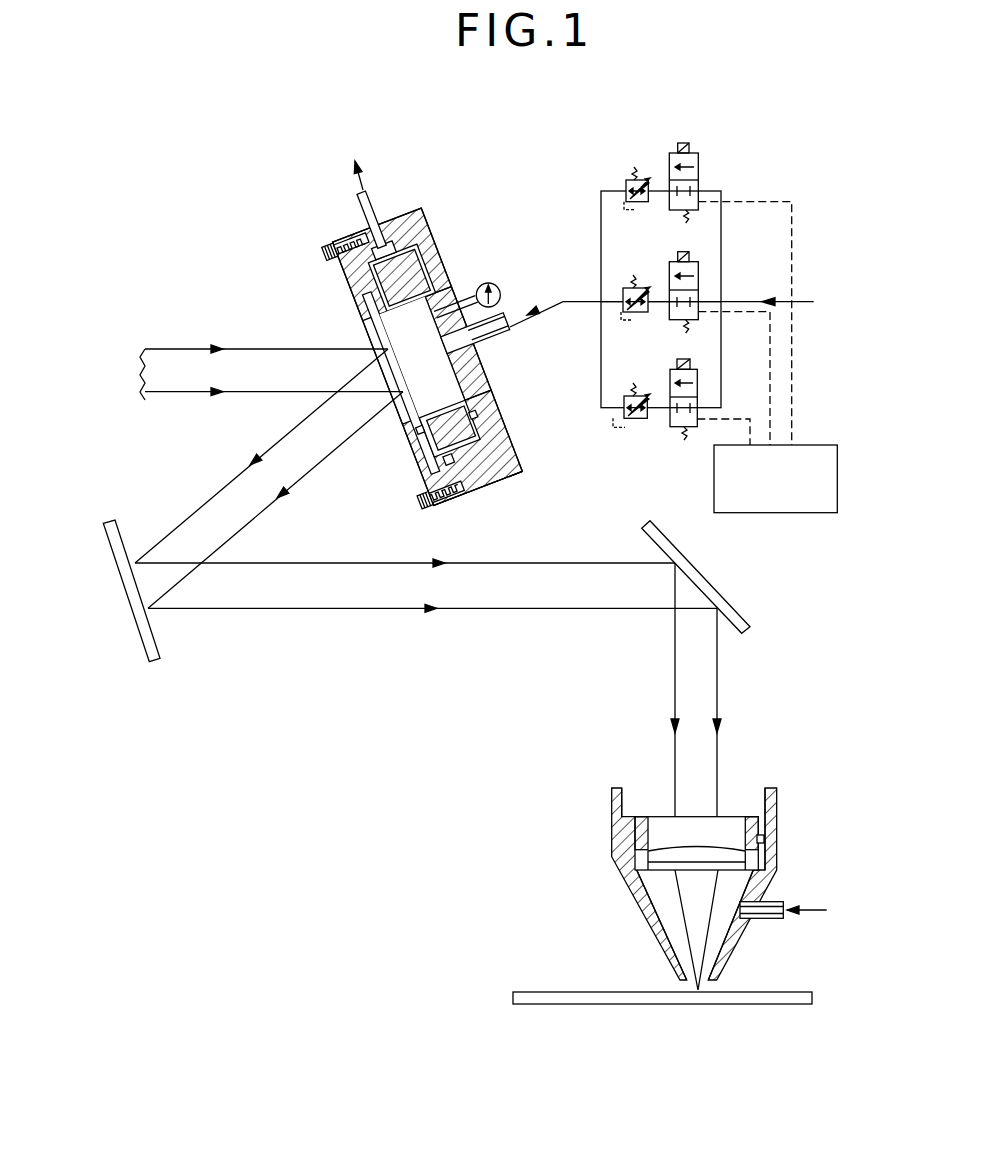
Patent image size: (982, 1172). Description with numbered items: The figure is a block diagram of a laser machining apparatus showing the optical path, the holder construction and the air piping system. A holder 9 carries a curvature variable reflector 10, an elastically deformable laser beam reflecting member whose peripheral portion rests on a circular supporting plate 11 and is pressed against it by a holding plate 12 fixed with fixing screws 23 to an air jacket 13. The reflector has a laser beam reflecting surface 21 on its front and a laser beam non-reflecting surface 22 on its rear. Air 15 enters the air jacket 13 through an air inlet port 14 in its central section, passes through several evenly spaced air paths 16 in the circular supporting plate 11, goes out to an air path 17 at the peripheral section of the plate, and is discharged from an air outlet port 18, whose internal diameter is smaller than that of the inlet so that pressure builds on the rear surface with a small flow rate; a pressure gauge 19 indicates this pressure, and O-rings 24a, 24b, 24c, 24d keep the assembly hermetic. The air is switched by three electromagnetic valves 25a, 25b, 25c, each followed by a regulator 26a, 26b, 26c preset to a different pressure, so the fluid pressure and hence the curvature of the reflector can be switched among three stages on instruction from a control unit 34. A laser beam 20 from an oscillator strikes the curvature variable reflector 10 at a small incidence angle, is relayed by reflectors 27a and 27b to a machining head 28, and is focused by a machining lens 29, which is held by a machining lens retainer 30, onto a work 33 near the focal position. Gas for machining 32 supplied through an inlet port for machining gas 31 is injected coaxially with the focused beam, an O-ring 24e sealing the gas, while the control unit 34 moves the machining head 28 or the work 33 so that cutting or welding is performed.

The holder 9 is at (421, 206).
The curvature variable reflector 10 is at (400, 363).
The circular supporting plate 11 is at (463, 407).
The holding plate 12 is at (444, 507).
The air jacket 13 is at (521, 466).
The air inlet port 14 is at (497, 347).
The air 15 is at (546, 304).
The air paths 16 is at (433, 275).
The air path 17 is at (396, 253).
The air outlet port 18 is at (372, 200).
The pressure gauge 19 is at (489, 283).
The laser beam 20 is at (190, 348).
The laser beam reflecting surface 21 is at (367, 331).
The laser beam non-reflecting surface 22 is at (386, 316).
The fixing screw 23 is at (325, 252).
The O-ring 24a is at (487, 432).
The O-ring 24b is at (422, 480).
The O-ring 24c is at (413, 435).
The O-ring 24d is at (415, 467).
The O-ring 24e is at (766, 840).
The electromagnetic valve 25a is at (699, 158).
The electromagnetic valve 25b is at (669, 272).
The electromagnetic valve 25c is at (670, 380).
The regulator 26a is at (626, 184).
The regulator 26b is at (623, 296).
The regulator 26c is at (624, 402).
The reflector 27a is at (162, 646).
The reflector 27b is at (735, 598).
The machining head 28 is at (612, 820).
The machining lens 29 is at (665, 871).
The machining lens retainer 30 is at (745, 792).
The inlet port for machining gas 31 is at (760, 920).
The gas for machining 32 is at (820, 906).
The work 33 is at (545, 992).
The control unit 34 is at (714, 490).